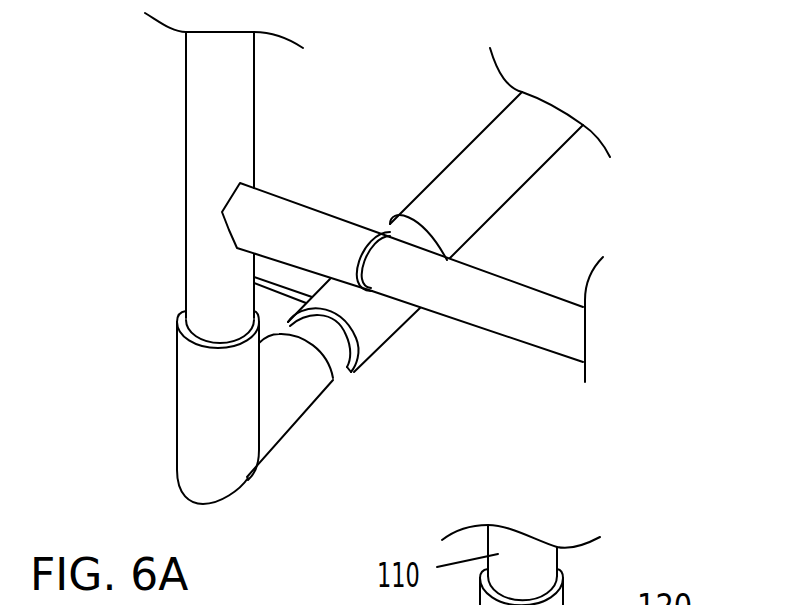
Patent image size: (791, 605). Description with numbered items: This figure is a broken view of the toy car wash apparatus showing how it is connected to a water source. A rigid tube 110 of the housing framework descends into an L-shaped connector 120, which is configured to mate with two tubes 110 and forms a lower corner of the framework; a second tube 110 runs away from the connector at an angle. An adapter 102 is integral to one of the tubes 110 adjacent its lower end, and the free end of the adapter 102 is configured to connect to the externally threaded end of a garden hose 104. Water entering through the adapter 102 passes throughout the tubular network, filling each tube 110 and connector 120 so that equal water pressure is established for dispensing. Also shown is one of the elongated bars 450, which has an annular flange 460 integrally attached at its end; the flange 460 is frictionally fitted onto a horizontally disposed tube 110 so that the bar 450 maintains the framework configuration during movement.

The adapter 102 is at (295, 215).
The garden hose 104 is at (517, 328).
The rigid tube 110 is at (198, 115).
The L-shaped connector 120 is at (190, 415).
The elongated bar 450 is at (275, 268).
The annular flange 460 is at (367, 335).